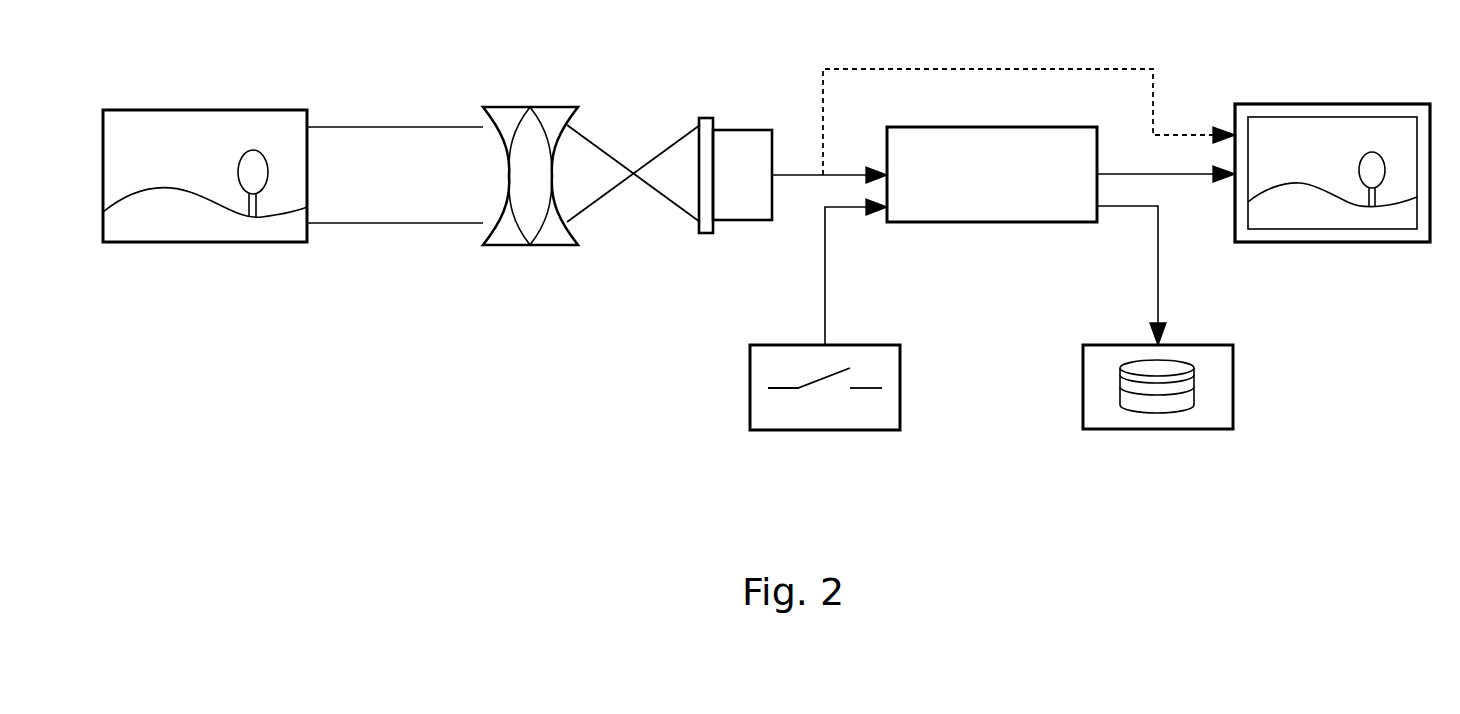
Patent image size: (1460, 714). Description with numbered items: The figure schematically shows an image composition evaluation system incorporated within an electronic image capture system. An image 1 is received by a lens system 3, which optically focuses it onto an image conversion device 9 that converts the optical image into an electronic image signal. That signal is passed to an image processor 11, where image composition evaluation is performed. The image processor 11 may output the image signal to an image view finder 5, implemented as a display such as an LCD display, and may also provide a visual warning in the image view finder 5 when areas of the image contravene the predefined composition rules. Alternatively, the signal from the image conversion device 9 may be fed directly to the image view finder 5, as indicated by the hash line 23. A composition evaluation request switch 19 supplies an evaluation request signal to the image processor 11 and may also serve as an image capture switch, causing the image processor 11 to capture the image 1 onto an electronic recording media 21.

The image 1 is at (162, 110).
The lens system 3 is at (508, 107).
The image conversion device 9 is at (702, 118).
The image processor 11 is at (1000, 222).
The image view finder 5 is at (1327, 104).
The composition evaluation request switch 19 is at (750, 395).
The electronic recording media 21 is at (1083, 392).
The hash line 23 is at (1003, 69).